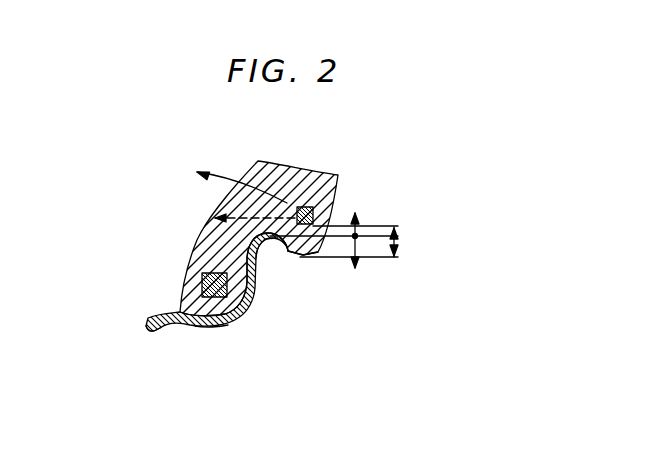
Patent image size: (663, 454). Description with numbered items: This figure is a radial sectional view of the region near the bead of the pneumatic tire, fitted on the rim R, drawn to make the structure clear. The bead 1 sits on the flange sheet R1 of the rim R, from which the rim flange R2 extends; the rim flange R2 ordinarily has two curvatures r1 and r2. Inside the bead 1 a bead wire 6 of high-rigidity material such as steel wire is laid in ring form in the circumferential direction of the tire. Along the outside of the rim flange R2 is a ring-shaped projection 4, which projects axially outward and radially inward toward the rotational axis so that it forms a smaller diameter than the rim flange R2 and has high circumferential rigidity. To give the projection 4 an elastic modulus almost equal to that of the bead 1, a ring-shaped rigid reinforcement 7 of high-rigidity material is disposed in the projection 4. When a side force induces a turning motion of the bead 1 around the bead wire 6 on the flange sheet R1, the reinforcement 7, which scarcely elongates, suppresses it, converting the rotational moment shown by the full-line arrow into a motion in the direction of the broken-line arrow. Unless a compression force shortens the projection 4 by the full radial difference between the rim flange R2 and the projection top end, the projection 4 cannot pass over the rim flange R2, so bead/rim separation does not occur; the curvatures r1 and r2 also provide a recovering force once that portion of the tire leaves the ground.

The bead 1 is at (182, 285).
The ring-shaped projection 4 is at (308, 257).
The bead wire 6 is at (193, 264).
The rigid reinforcement 7 is at (333, 173).
The rim R is at (155, 328).
The flange sheet R1 is at (210, 323).
The rim flange R2 is at (288, 253).
The curvature of the rim flange r1 is at (257, 259).
The curvature of the rim flange r2 is at (267, 258).